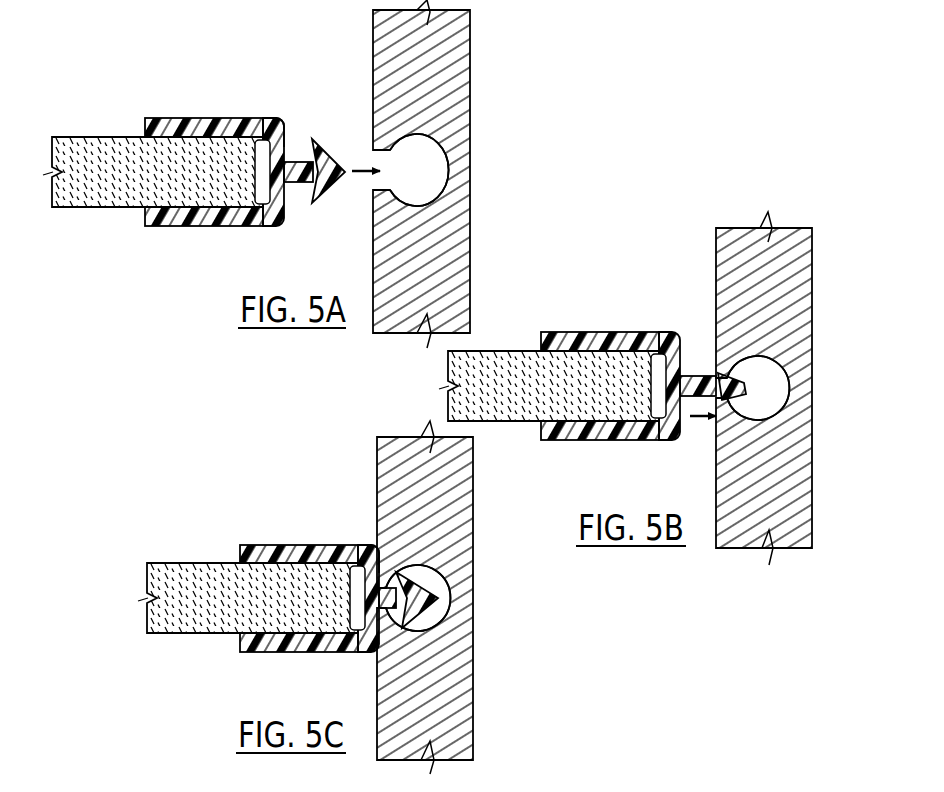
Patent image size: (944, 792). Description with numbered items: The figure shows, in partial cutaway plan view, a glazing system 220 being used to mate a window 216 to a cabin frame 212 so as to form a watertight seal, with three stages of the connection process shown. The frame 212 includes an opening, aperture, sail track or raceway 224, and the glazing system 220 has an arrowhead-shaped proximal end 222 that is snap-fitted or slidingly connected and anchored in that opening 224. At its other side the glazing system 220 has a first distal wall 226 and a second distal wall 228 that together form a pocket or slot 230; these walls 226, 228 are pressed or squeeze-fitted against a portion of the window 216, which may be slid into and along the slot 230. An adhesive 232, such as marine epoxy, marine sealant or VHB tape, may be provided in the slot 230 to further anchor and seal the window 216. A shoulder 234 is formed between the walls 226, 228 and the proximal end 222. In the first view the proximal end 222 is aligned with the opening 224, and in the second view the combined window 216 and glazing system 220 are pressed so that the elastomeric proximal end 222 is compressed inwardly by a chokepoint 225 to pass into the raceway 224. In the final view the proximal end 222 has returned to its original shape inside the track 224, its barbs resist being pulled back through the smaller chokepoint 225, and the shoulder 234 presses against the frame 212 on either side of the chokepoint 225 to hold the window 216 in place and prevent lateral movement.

In FIG. 5A, the cabin frame 212 is at (463, 83).
In FIG. 5B, the cabin frame 212 is at (803, 244).
In FIG. 5C, the cabin frame 212 is at (425, 597).
In FIG. 5A, the window 216 is at (153, 150).
In FIG. 5B, the window 216 is at (549, 364).
In FIG. 5C, the window 216 is at (248, 623).
In FIG. 5A, the glazing system 220 is at (239, 156).
In FIG. 5B, the glazing system 220 is at (628, 368).
In FIG. 5C, the glazing system 220 is at (300, 593).
In FIG. 5A, the proximal end 222 is at (340, 146).
In FIG. 5B, the proximal end 222 is at (715, 360).
In FIG. 5C, the proximal end 222 is at (461, 593).
In FIG. 5A, the opening 224 is at (435, 166).
In FIG. 5B, the opening 224 is at (775, 376).
In FIG. 5C, the opening 224 is at (452, 624).
In FIG. 5A, the chokepoint 225 is at (351, 219).
In FIG. 5B, the chokepoint 225 is at (770, 444).
In FIG. 5A, the first distal wall 226 is at (204, 94).
In FIG. 5B, the first distal wall 226 is at (599, 318).
In FIG. 5C, the first distal wall 226 is at (281, 533).
In FIG. 5A, the second distal wall 228 is at (204, 246).
In FIG. 5B, the second distal wall 228 is at (600, 461).
In FIG. 5C, the second distal wall 228 is at (286, 667).
In FIG. 5A, the slot 230 is at (274, 197).
In FIG. 5B, the slot 230 is at (660, 356).
In FIG. 5C, the slot 230 is at (349, 580).
In FIG. 5A, the adhesive 232 is at (174, 174).
In FIG. 5A, the shoulder 234 is at (304, 105).
In FIG. 5C, the shoulder 234 is at (361, 528).